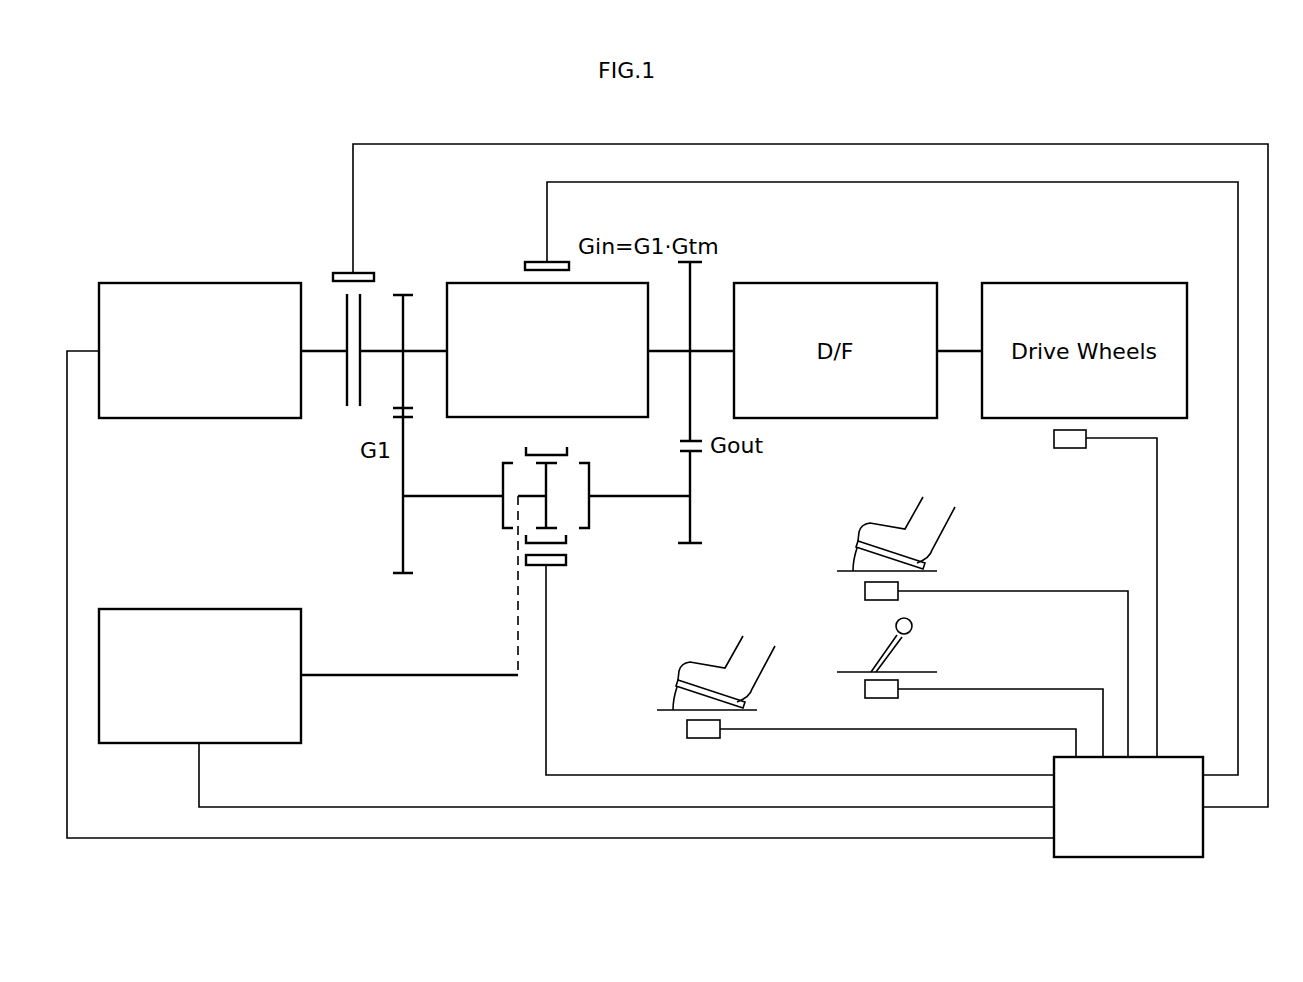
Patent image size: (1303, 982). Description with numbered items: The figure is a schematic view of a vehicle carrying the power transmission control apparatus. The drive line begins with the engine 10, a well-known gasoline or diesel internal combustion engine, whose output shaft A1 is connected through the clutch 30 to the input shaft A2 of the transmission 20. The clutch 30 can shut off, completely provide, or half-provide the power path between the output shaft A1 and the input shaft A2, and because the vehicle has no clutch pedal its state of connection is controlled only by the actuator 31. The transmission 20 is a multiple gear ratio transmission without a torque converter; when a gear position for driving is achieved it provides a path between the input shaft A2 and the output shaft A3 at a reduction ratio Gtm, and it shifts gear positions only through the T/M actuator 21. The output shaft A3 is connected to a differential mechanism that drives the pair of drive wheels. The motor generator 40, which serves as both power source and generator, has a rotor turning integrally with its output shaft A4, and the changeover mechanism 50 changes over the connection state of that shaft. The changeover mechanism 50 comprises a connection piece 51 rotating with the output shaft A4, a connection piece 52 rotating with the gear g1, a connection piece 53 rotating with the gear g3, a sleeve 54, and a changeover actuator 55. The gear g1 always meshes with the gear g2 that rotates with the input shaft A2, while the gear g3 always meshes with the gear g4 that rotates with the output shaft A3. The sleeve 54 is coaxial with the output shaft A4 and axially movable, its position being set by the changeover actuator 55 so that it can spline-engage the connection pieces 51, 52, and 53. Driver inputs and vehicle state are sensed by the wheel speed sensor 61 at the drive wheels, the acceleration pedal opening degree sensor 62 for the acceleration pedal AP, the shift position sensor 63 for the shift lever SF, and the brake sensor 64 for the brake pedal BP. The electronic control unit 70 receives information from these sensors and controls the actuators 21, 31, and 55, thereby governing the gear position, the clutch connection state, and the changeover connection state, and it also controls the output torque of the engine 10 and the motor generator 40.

The engine (E/G) 10 is at (168, 419).
The transmission (T/M) 20 is at (463, 418).
The T/M actuator 21 is at (528, 262).
The clutch (C/T) 30 is at (344, 422).
The actuator 31 is at (341, 273).
The motor generator (M/G) 40 is at (145, 743).
The changeover mechanism 50 is at (548, 530).
The connection piece 51 is at (548, 480).
The connection piece 52 is at (503, 517).
The connection piece 53 is at (589, 517).
The sleeve 54 is at (569, 452).
The changeover actuator 55 is at (562, 565).
The wheel speed sensor 61 is at (1068, 448).
The acceleration pedal opening degree sensor 62 is at (865, 591).
The shift position sensor 63 is at (865, 689).
The brake sensor 64 is at (687, 729).
The electronic control unit (ECU) 70 is at (1186, 757).
The output shaft A1 is at (323, 352).
The input shaft A2 is at (383, 352).
The output shaft A3 is at (672, 352).
The output shaft A4 is at (385, 676).
The gear g1 is at (403, 543).
The gear g2 is at (404, 315).
The gear g3 is at (690, 522).
The gear g4 is at (692, 290).
The acceleration pedal AP is at (857, 545).
The brake pedal BP is at (677, 684).
The shift lever SF is at (878, 646).